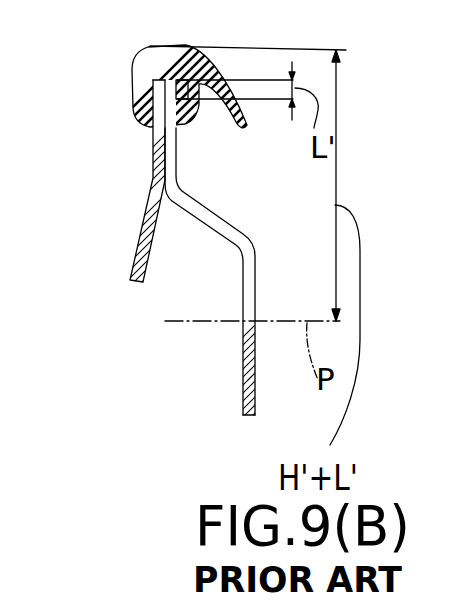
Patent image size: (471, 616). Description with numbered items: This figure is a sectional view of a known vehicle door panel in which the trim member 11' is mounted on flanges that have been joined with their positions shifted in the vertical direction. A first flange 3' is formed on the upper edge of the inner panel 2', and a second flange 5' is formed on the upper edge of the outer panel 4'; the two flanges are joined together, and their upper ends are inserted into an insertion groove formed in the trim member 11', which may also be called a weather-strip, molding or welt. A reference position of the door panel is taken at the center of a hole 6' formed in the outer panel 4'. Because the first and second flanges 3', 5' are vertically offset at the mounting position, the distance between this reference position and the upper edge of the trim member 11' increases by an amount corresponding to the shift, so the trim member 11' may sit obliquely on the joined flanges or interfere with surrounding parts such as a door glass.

The trim member 11' is at (199, 80).
The inner panel 2' is at (176, 190).
The first flange 3' is at (125, 124).
The second flange 5' is at (210, 247).
The hole 6' is at (265, 350).
The outer panel 4' is at (278, 413).